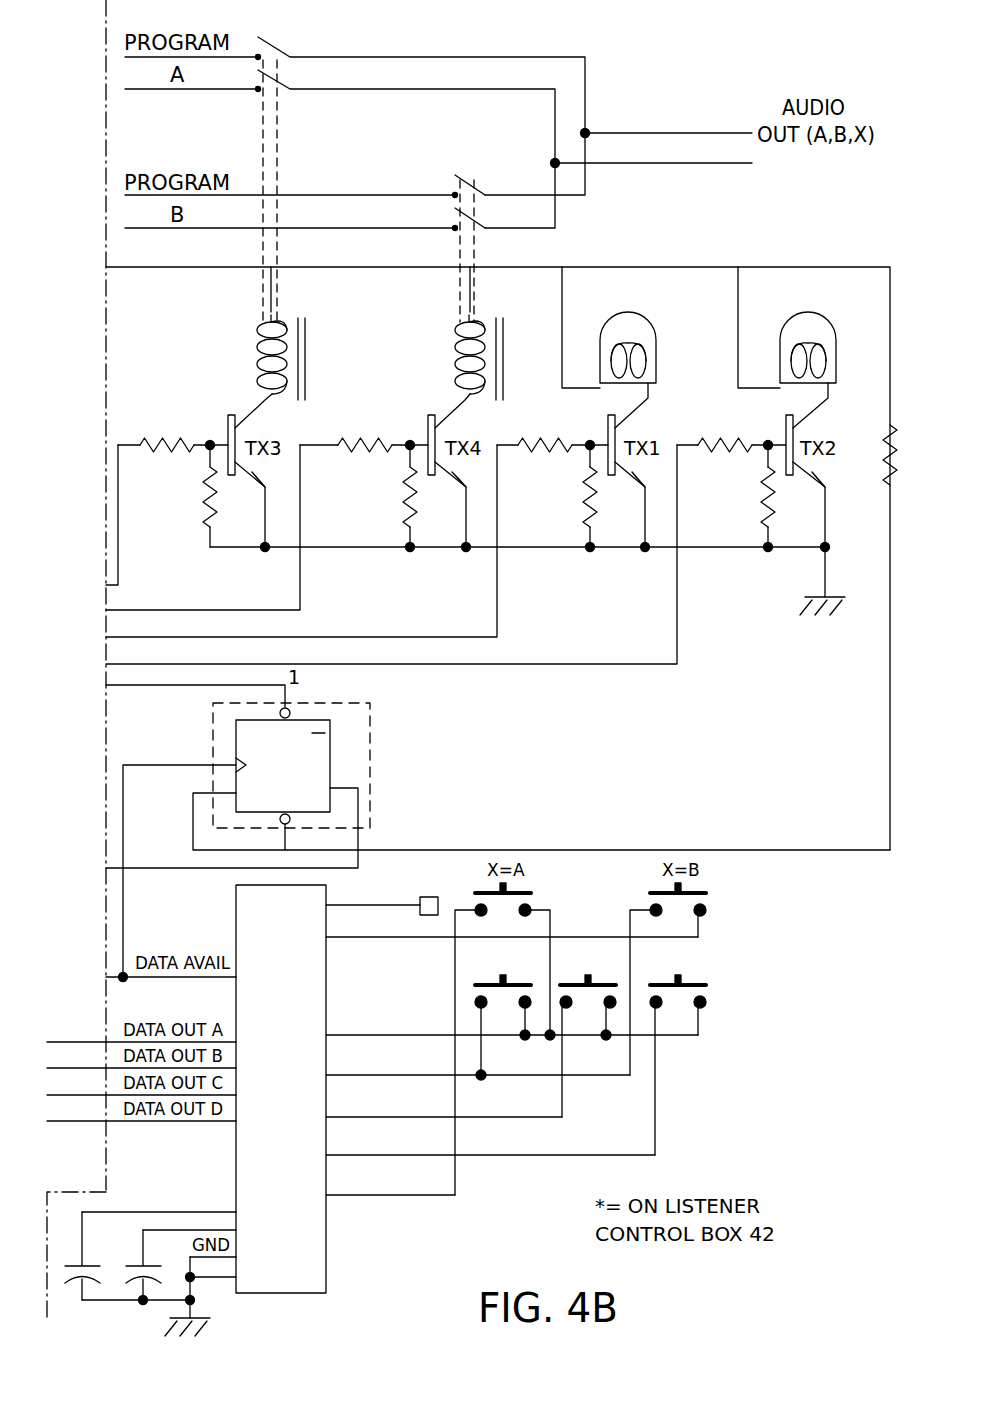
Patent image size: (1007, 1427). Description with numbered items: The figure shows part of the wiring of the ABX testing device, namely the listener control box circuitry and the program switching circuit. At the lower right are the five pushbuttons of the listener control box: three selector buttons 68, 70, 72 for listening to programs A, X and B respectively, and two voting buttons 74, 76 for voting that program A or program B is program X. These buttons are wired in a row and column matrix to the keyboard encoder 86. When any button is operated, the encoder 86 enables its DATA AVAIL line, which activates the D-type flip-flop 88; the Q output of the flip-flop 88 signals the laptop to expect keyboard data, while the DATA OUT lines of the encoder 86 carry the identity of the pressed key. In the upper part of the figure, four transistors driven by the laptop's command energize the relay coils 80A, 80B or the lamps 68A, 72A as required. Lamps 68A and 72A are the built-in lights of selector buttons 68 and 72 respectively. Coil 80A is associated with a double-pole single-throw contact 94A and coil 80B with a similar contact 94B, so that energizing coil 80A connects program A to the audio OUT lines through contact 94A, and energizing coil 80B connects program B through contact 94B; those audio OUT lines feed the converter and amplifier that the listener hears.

The DPST contact 94A is at (265, 37).
The DPST contact 94B is at (478, 175).
The relay coil 80A is at (258, 326).
The relay coil 80B is at (456, 326).
The lamp 68A is at (638, 317).
The lamp 72A is at (818, 317).
The D-type flip-flop 88 is at (330, 748).
The keyboard encoder 86 is at (310, 1293).
The voting button 74 is at (530, 893).
The voting button 76 is at (705, 893).
The selector button 68 is at (518, 975).
The selector button 70 is at (565, 977).
The selector button 72 is at (705, 981).